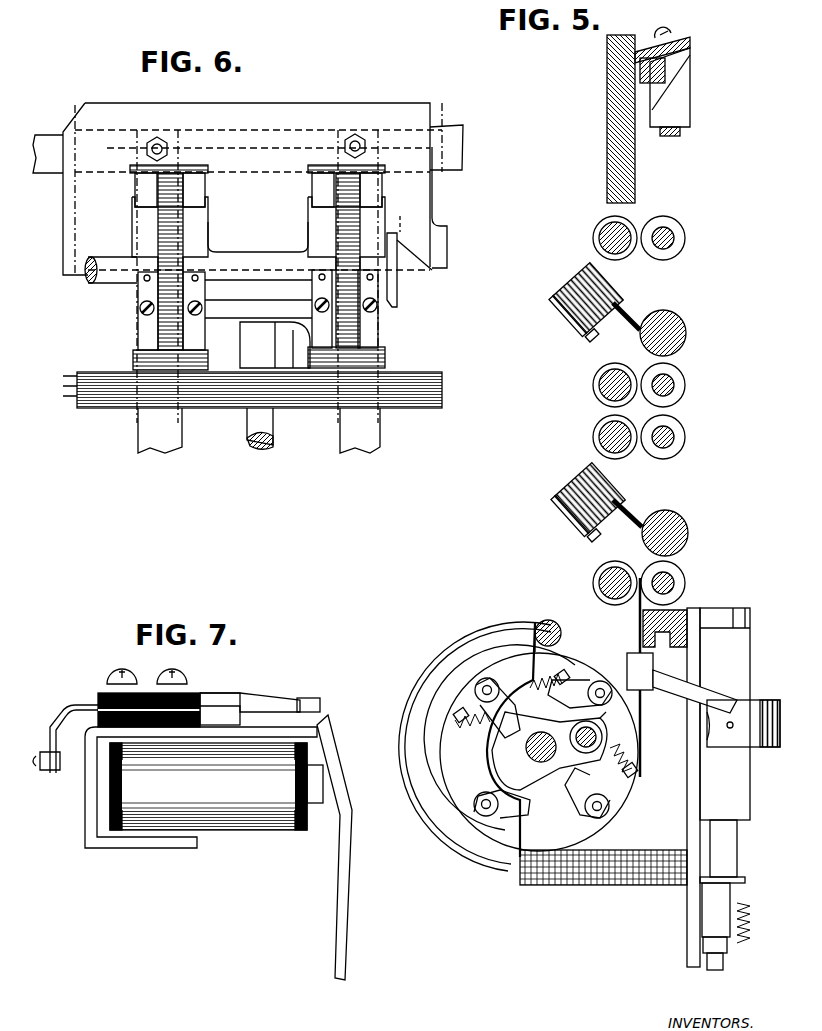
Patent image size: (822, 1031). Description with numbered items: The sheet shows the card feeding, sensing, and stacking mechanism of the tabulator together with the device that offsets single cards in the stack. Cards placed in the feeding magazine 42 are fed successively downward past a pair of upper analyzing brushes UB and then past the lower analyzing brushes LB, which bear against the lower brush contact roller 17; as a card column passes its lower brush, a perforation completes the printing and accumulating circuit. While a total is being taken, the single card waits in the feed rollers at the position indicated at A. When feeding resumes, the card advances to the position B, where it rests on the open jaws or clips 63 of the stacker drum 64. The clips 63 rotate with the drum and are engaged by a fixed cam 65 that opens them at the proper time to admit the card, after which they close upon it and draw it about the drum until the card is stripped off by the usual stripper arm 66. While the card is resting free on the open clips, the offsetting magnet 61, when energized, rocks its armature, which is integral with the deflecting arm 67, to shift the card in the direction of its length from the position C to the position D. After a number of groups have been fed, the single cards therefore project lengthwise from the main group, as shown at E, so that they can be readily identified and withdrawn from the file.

In FIG. 5, the lower brush contact roller 17 is at (672, 526).
In FIG. 5, the feeding magazine 42 is at (603, 119).
In FIG. 6, the offsetting magnet 61 is at (400, 216).
In FIG. 5, the offsetting magnet 61 is at (727, 747).
In FIG. 7, the offsetting magnet 61 is at (208, 786).
In FIG. 6, the clips (jaws) of the stacker drum 63 is at (145, 329).
In FIG. 5, the clips (jaws) of the stacker drum 63 is at (620, 788).
In FIG. 6, the stacker drum 64 is at (197, 221).
In FIG. 5, the stacker drum 64 is at (572, 812).
In FIG. 6, the fixed cam 65 is at (425, 273).
In FIG. 5, the fixed cam 65 is at (612, 718).
In FIG. 5, the stripper arm 66 is at (515, 847).
In FIG. 6, the deflecting arm 67 is at (438, 192).
In FIG. 5, the deflecting arm 67 is at (675, 680).
In FIG. 7, the deflecting arm 67 is at (333, 893).
In FIG. 5, the card position in the feed rollers A is at (636, 603).
In FIG. 5, the offsetting position on the open jaws B is at (637, 707).
In FIG. 6, the normal card position C is at (442, 118).
In FIG. 6, the offset card position D is at (75, 122).
In FIG. 6, the projecting single cards E is at (55, 399).
In FIG. 5, the upper analyzing brushes UB is at (632, 320).
In FIG. 5, the lower analyzing brushes LB is at (638, 520).